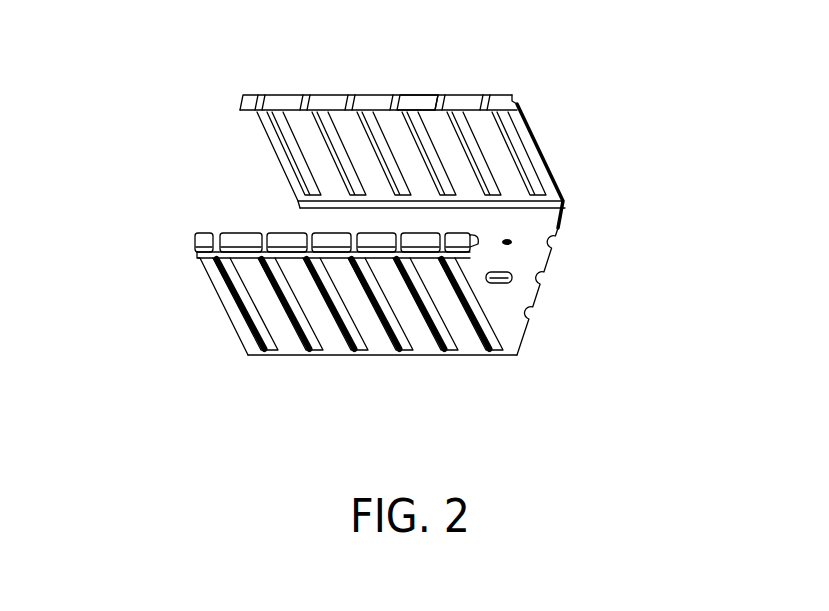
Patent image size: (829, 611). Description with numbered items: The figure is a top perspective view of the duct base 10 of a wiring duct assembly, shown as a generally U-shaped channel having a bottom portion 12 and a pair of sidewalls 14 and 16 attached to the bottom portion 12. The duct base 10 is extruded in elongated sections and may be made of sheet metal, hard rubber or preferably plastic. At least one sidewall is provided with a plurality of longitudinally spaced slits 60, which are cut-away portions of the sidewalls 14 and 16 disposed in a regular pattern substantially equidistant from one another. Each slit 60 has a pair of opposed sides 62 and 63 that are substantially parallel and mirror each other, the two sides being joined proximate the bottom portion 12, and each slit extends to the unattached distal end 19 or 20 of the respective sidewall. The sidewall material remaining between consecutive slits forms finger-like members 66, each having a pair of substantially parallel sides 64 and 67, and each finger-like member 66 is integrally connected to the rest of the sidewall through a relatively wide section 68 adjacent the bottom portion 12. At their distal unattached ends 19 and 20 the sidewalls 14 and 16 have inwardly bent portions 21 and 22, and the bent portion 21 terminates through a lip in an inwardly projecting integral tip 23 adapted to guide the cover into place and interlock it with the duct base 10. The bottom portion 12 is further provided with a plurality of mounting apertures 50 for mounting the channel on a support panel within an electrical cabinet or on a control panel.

The duct base 10 is at (580, 167).
The bottom portion 12 is at (297, 213).
The sidewall 14 is at (232, 325).
The sidewall 16 is at (277, 150).
The distal end 19 is at (243, 107).
The distal end 20 is at (197, 240).
The inwardly bent portion 21 is at (518, 105).
The inwardly bent portion 22 is at (474, 258).
The projecting tip 23 is at (190, 248).
The mounting apertures 50 is at (512, 243).
The slits 60 is at (485, 343).
The opposed side 62 is at (440, 357).
The opposed side 63 is at (440, 357).
The side 64 is at (458, 110).
The finger-like members 66 is at (523, 133).
The side 67 is at (413, 101).
The wide section 68 is at (566, 203).